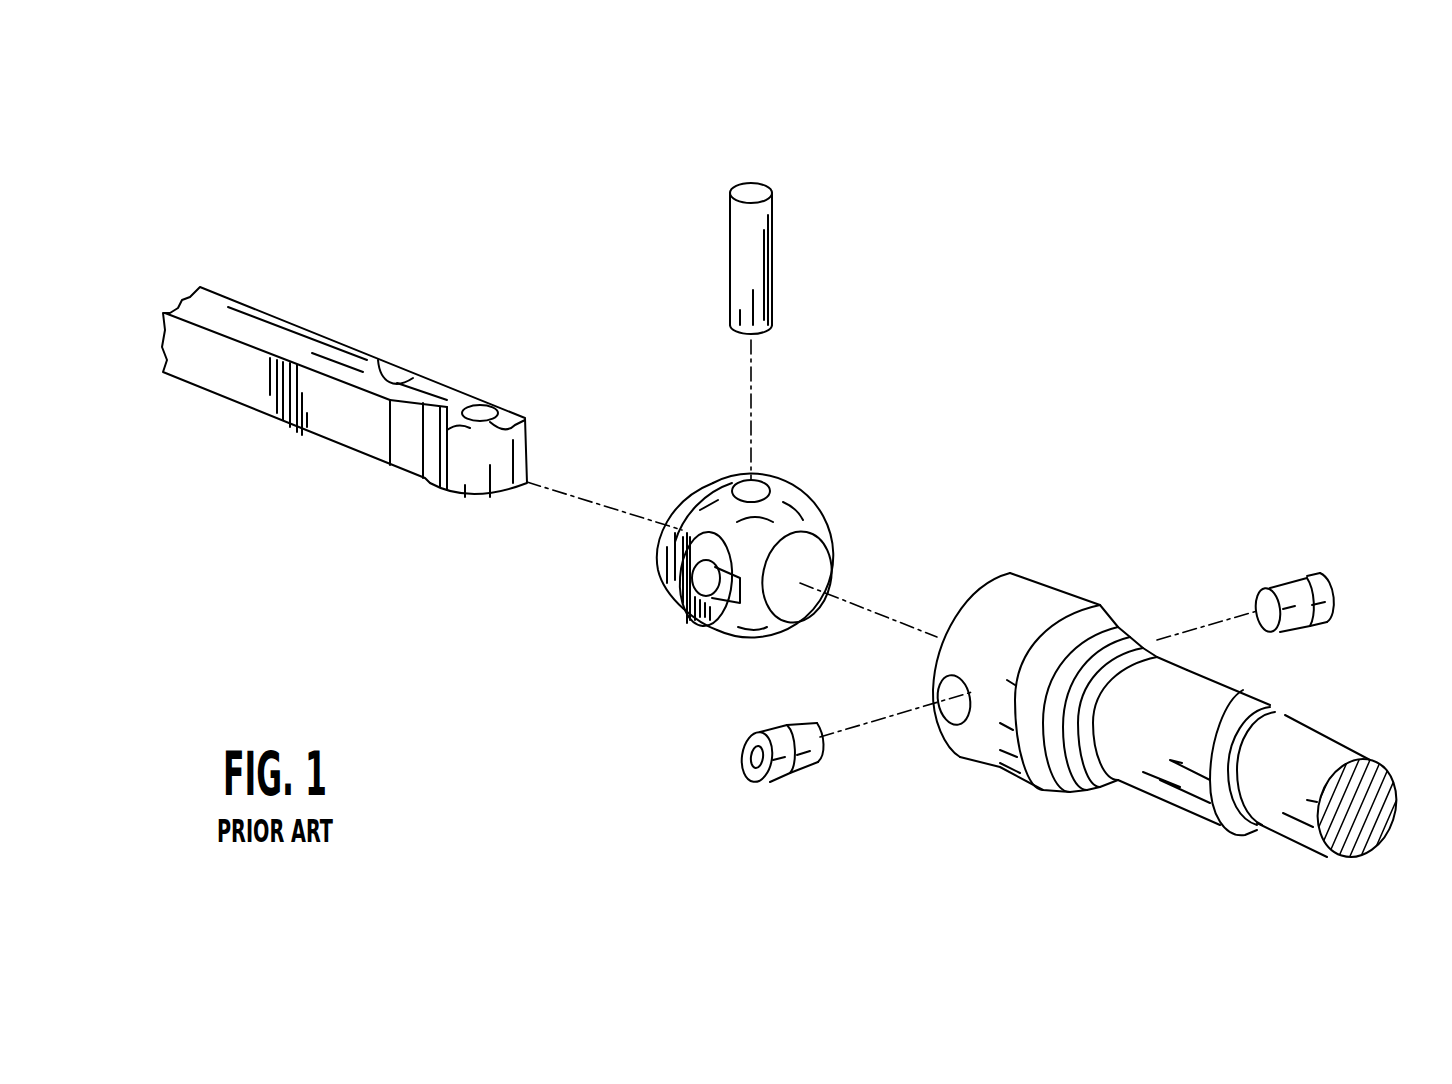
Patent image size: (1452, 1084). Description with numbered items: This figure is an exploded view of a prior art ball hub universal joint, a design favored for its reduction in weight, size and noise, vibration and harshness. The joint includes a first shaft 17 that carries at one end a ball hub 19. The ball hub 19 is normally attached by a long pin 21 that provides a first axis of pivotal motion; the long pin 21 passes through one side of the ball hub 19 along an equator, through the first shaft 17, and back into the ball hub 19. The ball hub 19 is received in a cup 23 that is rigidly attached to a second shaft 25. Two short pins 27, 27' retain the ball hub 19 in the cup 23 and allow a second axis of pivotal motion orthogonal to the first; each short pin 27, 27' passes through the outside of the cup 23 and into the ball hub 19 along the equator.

The first shaft 17 is at (256, 323).
The ball hub 19 is at (797, 503).
The long pin 21 is at (737, 240).
The cup 23 is at (1030, 587).
The second shaft 25 is at (1240, 690).
The short pin 27 is at (817, 803).
The short pin 27' is at (1314, 525).